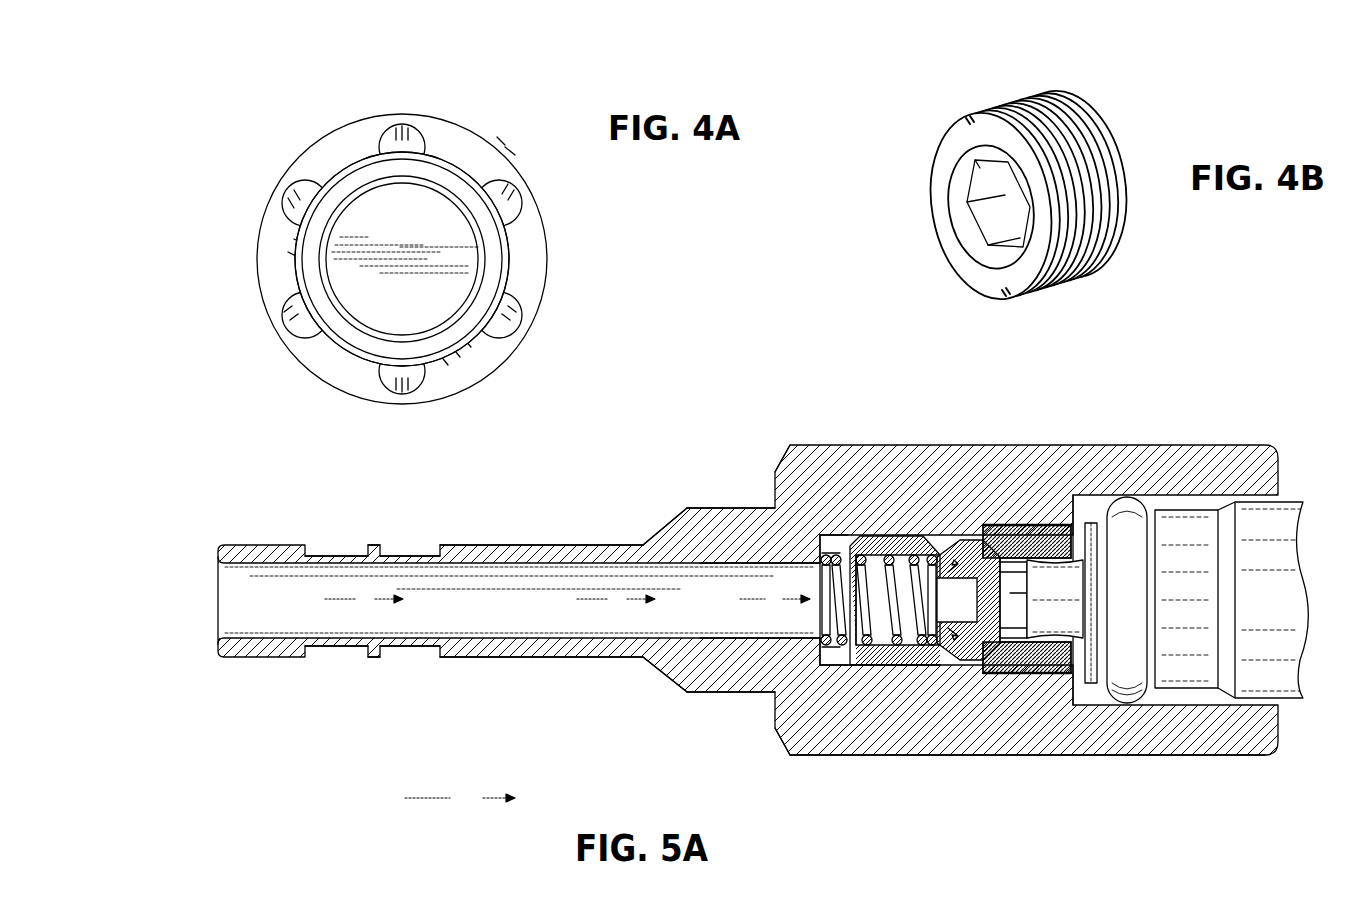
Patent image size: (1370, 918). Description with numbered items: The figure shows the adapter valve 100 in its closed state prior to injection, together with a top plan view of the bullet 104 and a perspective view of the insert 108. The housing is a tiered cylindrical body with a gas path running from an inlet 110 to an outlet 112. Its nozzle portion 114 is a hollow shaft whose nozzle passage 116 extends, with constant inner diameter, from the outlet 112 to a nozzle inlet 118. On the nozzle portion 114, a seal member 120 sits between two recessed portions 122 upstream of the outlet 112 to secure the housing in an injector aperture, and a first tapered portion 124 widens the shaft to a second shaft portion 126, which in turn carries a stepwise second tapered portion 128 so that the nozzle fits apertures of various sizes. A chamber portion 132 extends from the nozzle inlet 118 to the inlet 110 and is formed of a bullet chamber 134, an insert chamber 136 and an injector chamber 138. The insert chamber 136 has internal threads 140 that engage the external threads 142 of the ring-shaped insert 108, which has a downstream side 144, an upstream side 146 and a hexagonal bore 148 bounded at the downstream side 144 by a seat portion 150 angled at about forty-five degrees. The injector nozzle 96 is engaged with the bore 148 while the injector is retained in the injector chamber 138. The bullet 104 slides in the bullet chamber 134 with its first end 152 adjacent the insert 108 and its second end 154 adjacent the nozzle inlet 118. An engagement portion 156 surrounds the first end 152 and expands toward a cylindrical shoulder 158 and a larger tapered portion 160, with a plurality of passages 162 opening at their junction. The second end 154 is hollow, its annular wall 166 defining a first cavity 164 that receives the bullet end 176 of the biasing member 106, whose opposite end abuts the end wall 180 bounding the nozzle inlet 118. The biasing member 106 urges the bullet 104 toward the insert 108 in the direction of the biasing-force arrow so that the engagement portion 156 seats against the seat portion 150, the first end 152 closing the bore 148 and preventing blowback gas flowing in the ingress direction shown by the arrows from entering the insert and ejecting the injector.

In FIG. 5A, the injector nozzle 96 is at (1070, 573).
In FIG. 5A, the adapter valve 100 is at (752, 589).
In FIG. 4A, the bullet 104 is at (416, 266).
In FIG. 5A, the bullet 104 is at (902, 538).
In FIG. 5A, the biasing member 106 is at (729, 622).
In FIG. 4B, the insert 108 is at (1049, 193).
In FIG. 5A, the inlet 110 is at (1278, 493).
In FIG. 5A, the outlet 112 is at (218, 620).
In FIG. 5A, the nozzle portion 114 is at (492, 672).
In FIG. 5A, the nozzle passage 116 is at (532, 629).
In FIG. 5A, the nozzle inlet 118 is at (750, 642).
In FIG. 5A, the seal member 120 is at (375, 543).
In FIG. 5A, the recessed portions 122 is at (405, 650).
In FIG. 5A, the first tapered portion 124 is at (657, 660).
In FIG. 5A, the second shaft portion 126 is at (697, 698).
In FIG. 5A, the second tapered portion 128 is at (820, 622).
In FIG. 5A, the chamber portion 132 is at (993, 757).
In FIG. 5A, the bullet chamber 134 is at (835, 547).
In FIG. 5A, the insert chamber 136 is at (1063, 540).
In FIG. 5A, the injector chamber 138 is at (1185, 505).
In FIG. 5A, the internal threads 140 is at (1057, 675).
In FIG. 4B, the external threads 142 is at (1068, 199).
In FIG. 5A, the external threads 142 is at (1030, 673).
In FIG. 4B, the downstream side 144 is at (982, 273).
In FIG. 5A, the downstream side 144 is at (968, 543).
In FIG. 4B, the upstream side 146 is at (1128, 182).
In FIG. 5A, the upstream side 146 is at (1063, 662).
In FIG. 4B, the bore 148 is at (970, 175).
In FIG. 5A, the bore 148 is at (985, 662).
In FIG. 4B, the seat portion 150 is at (948, 220).
In FIG. 5A, the seat portion 150 is at (1010, 540).
In FIG. 4A, the first end 152 is at (415, 208).
In FIG. 5A, the first end 152 is at (1002, 593).
In FIG. 5A, the second end 154 is at (878, 628).
In FIG. 4A, the engagement portion 156 is at (507, 232).
In FIG. 5A, the engagement portion 156 is at (957, 652).
In FIG. 4A, the shoulder 158 is at (489, 268).
In FIG. 5A, the shoulder 158 is at (978, 650).
In FIG. 4A, the tapered portion 160 is at (487, 358).
In FIG. 5A, the tapered portion 160 is at (965, 538).
In FIG. 4A, the passages 162 is at (413, 138).
In FIG. 5A, the passages 162 is at (1002, 572).
In FIG. 5A, the first cavity 164 is at (767, 725).
In FIG. 5A, the annular wall 166 is at (873, 543).
In FIG. 5A, the bullet end 176 is at (912, 660).
In FIG. 5A, the end wall 180 is at (808, 548).